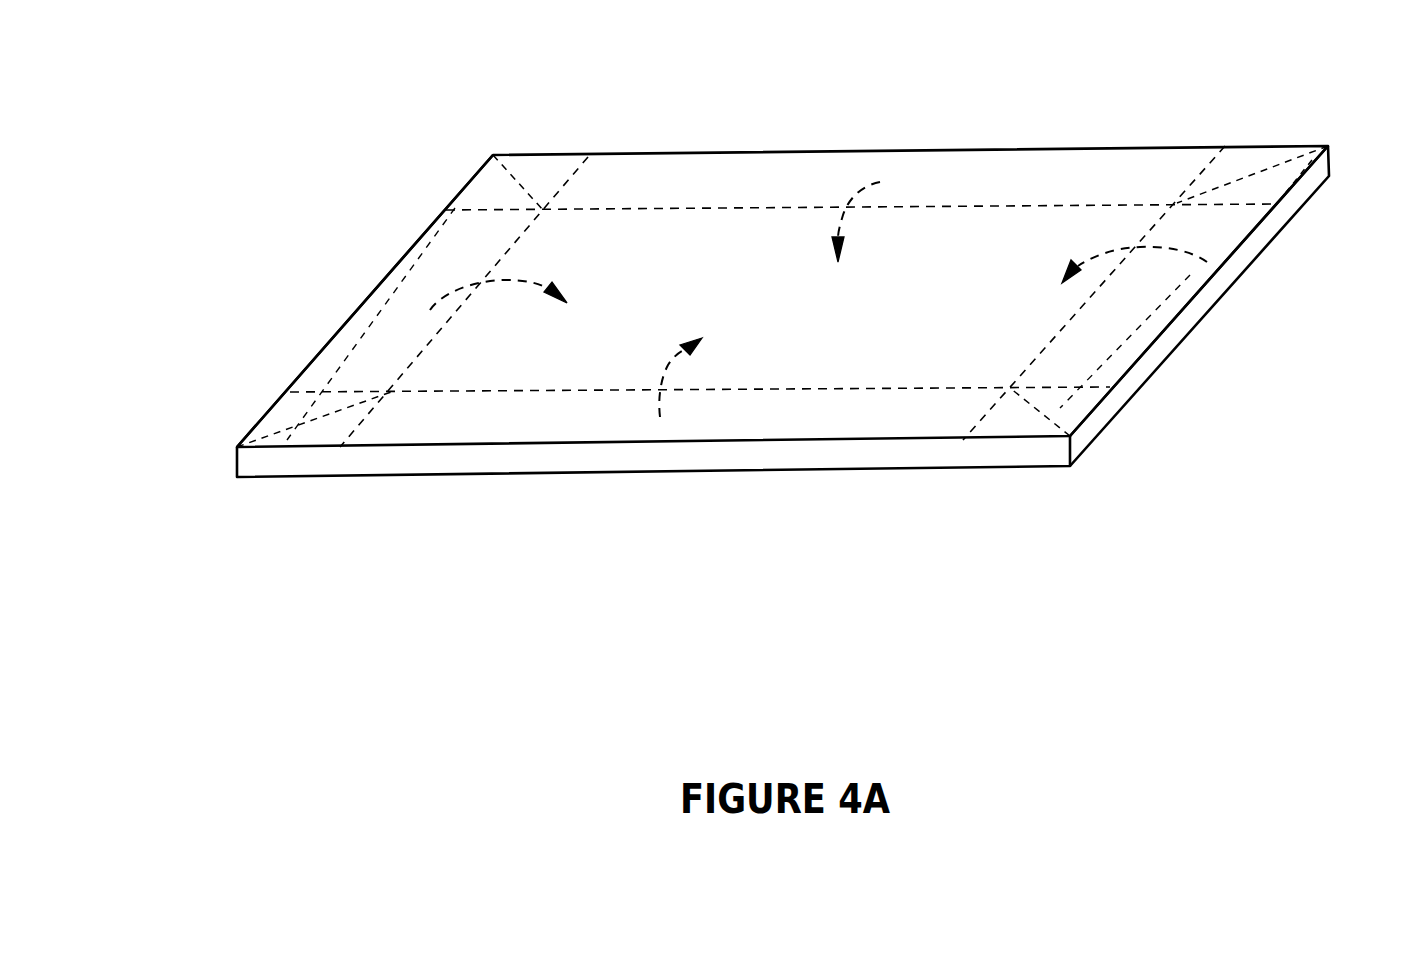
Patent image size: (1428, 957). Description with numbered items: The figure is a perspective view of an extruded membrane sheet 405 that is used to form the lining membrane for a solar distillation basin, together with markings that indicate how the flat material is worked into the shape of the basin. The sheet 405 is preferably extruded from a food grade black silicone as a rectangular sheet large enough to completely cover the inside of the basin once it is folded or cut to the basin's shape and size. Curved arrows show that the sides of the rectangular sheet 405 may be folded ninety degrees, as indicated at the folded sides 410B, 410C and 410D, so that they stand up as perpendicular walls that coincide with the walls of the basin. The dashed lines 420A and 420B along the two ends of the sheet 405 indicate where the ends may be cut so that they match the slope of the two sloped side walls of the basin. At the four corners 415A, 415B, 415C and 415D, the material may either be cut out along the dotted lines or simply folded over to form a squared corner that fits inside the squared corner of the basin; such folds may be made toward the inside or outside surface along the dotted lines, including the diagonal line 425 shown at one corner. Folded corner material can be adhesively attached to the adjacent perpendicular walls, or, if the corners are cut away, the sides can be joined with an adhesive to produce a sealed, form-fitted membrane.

The extruded membrane sheet 405 is at (660, 457).
The folded side 410B is at (1028, 293).
The folded side 410C is at (464, 302).
The folded side 410D is at (697, 386).
The corner 415A is at (1257, 158).
The corner 415B is at (563, 168).
The corner 415C is at (283, 415).
The corner 415D is at (1075, 402).
The dashed cut line 420A is at (380, 315).
The dashed cut line 420B is at (1163, 305).
The diagonal line 425 is at (1283, 156).